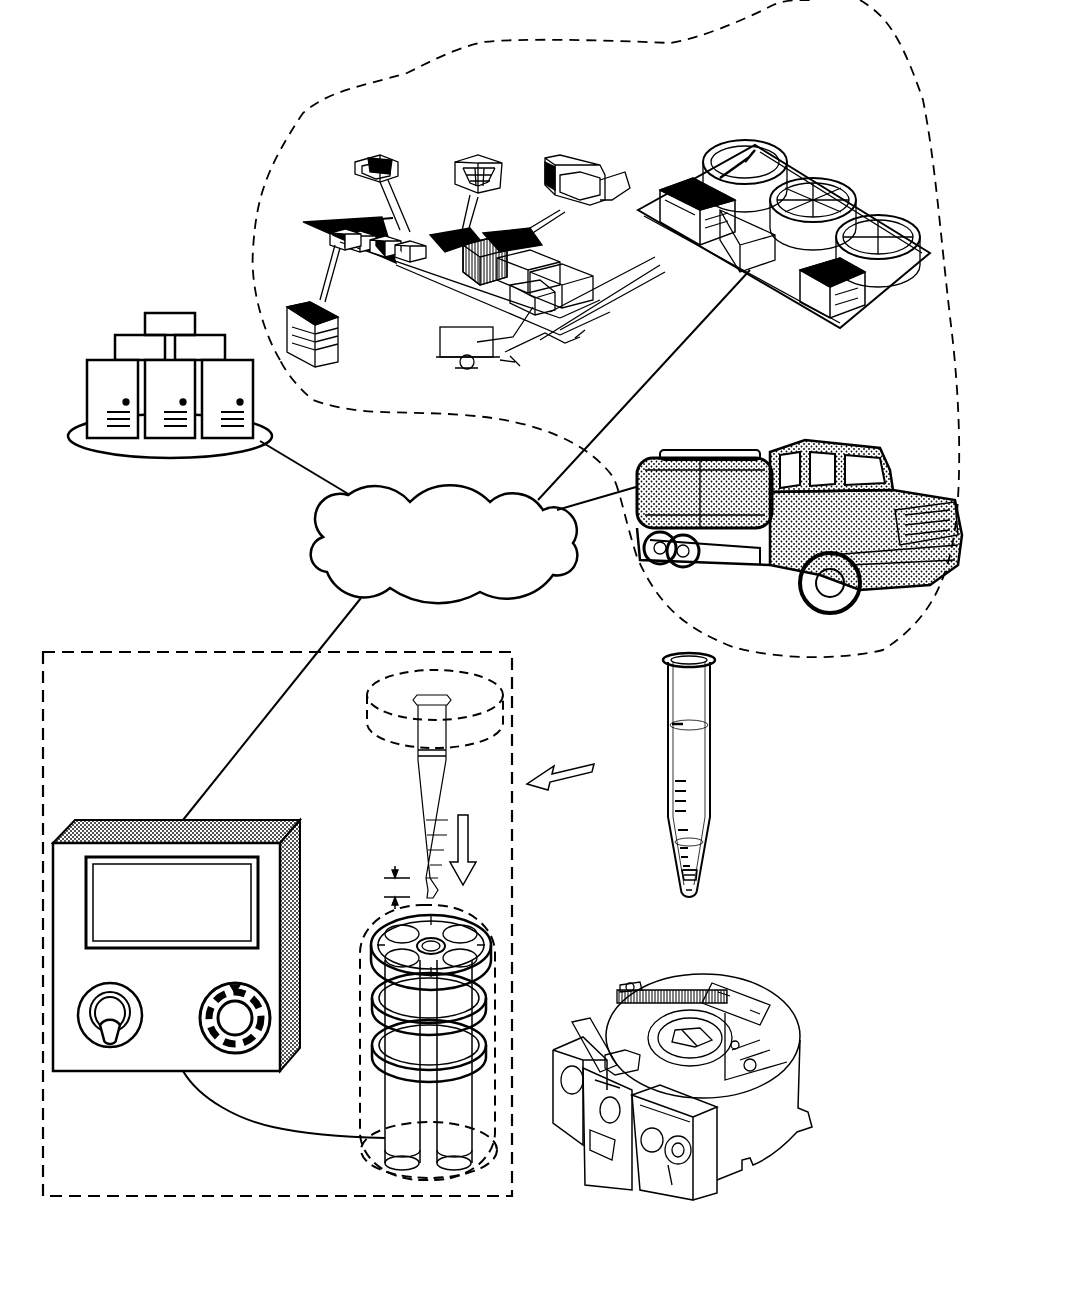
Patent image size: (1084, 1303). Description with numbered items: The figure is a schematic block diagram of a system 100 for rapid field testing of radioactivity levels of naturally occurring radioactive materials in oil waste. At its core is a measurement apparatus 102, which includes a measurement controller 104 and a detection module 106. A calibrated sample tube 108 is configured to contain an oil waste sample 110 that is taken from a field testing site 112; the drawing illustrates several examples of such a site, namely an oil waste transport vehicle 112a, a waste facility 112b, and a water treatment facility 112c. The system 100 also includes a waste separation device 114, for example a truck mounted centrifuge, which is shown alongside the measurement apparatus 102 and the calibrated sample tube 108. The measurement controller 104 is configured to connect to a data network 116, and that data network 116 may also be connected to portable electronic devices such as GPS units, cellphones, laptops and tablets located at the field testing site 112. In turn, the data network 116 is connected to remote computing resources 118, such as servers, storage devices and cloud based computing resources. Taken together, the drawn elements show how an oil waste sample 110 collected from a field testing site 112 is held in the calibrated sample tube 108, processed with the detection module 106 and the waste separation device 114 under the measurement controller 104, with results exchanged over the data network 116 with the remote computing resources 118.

The system 100 is at (114, 66).
The measurement apparatus 102 is at (84, 720).
The measurement controller 104 is at (146, 1088).
The detection module 106 is at (360, 1090).
The calibrated sample tube 108 is at (668, 755).
The oil waste sample 110 is at (698, 857).
The field testing site 112 is at (678, 88).
The oil waste transport vehicle 112a is at (765, 430).
The waste facility 112b is at (823, 150).
The water treatment facility 112c is at (484, 150).
The waste separation device 114 is at (814, 1027).
The data network 116 is at (444, 544).
The remote computing resources 118 is at (172, 487).